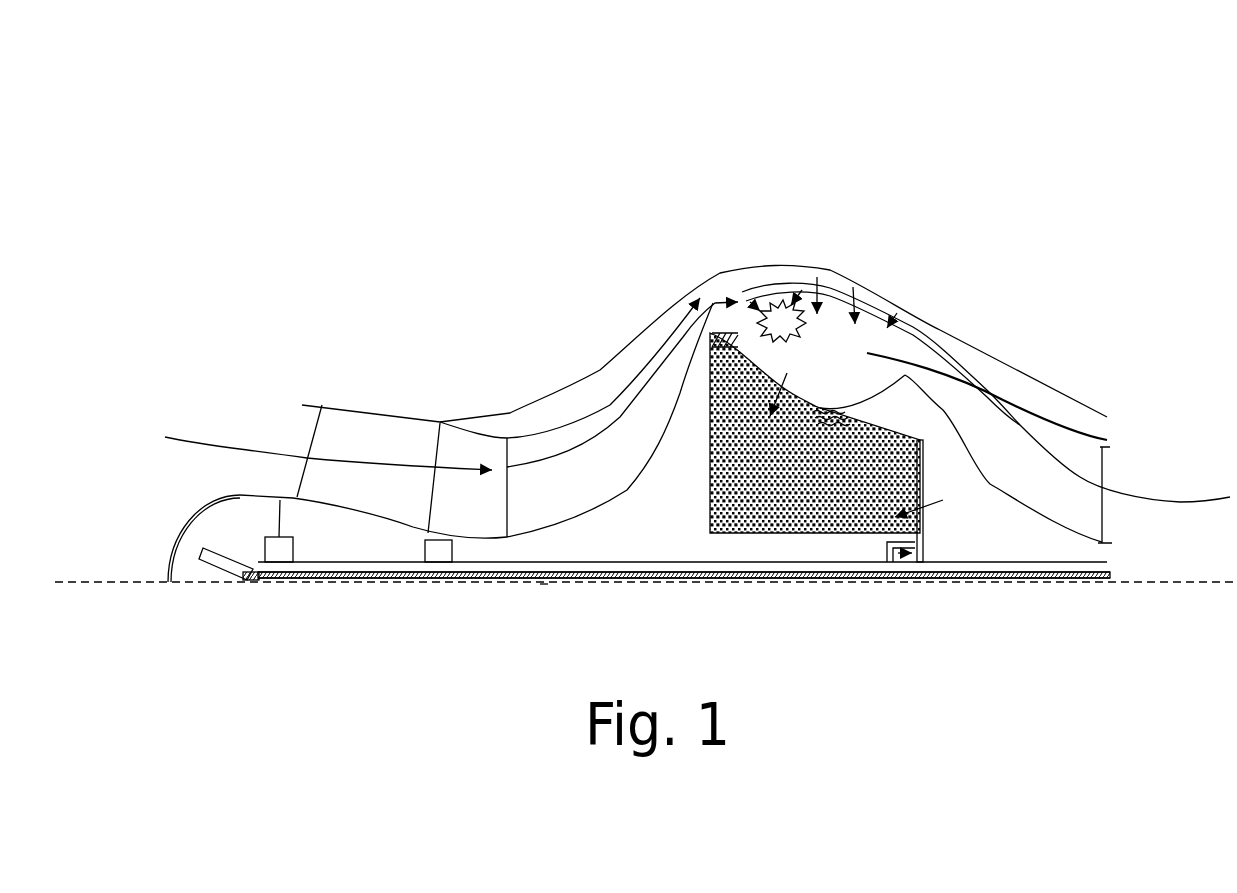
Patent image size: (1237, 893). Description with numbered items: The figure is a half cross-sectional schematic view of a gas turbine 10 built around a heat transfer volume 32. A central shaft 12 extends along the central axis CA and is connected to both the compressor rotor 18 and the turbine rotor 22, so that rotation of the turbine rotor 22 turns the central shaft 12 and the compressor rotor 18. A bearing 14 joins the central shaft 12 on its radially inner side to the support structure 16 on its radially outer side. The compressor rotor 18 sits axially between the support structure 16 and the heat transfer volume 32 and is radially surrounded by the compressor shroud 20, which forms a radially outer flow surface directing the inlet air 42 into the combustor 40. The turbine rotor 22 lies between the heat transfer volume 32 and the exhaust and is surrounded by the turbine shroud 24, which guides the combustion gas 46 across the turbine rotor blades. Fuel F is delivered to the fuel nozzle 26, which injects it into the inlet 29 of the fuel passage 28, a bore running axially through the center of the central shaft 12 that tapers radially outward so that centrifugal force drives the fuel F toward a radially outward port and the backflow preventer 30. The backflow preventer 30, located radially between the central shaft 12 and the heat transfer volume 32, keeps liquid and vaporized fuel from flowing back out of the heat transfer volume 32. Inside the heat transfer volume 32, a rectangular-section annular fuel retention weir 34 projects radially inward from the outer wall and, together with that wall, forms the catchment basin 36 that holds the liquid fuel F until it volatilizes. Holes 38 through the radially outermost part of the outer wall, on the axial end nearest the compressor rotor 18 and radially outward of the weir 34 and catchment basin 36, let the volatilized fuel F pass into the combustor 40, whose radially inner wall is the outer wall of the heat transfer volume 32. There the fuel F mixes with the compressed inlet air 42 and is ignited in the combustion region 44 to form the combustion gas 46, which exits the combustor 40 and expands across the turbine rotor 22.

The gas turbine 10 is at (926, 158).
The central shaft 12 is at (325, 566).
The bearing 14 is at (435, 552).
The support structure 16 is at (345, 404).
The compressor rotor 18 is at (663, 443).
The compressor shroud 20 is at (528, 404).
The turbine rotor 22 is at (990, 483).
The turbine shroud 24 is at (1066, 396).
The fuel nozzle 26 is at (218, 568).
The fuel passage 28 is at (500, 578).
The inlet 29 is at (262, 566).
The backflow preventer 30 is at (910, 556).
The heat transfer volume 32 is at (850, 508).
The fuel retention weir 34 is at (820, 418).
The catchment basin 36 is at (823, 413).
The holes 38 is at (722, 305).
The combustor 40 is at (833, 325).
The inlet air 42 is at (240, 447).
The combustion region 44 is at (780, 308).
The combustion gas 46 is at (988, 478).
The central axis CA is at (78, 581).
The fuel F is at (545, 584).